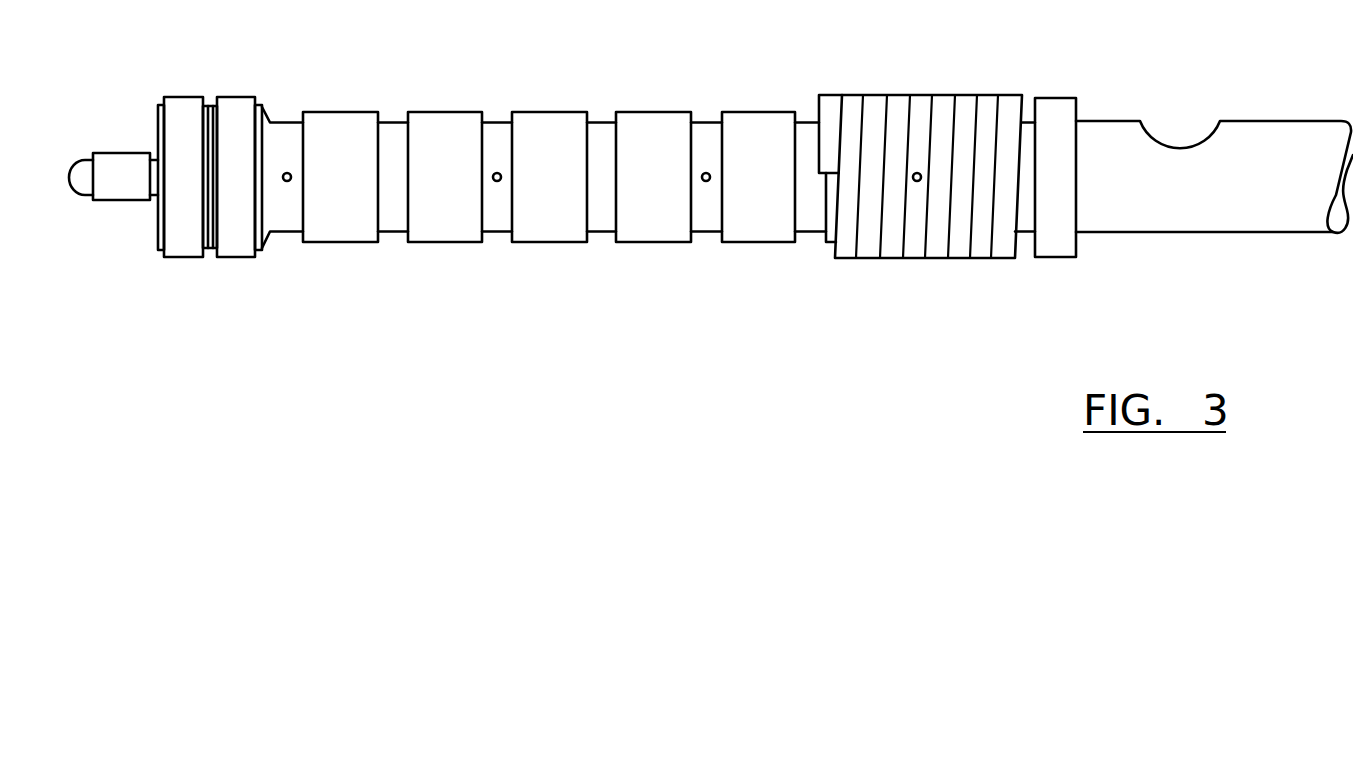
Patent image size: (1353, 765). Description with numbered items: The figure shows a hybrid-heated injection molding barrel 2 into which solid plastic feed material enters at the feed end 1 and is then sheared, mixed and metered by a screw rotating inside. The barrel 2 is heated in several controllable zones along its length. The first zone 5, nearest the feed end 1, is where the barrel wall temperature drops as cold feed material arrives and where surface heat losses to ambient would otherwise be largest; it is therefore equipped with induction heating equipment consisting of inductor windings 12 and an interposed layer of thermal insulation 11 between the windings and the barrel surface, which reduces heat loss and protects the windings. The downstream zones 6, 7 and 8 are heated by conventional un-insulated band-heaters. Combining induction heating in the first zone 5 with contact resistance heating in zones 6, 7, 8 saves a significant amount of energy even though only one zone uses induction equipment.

The feed end 1 is at (1180, 138).
The barrel 2 is at (1182, 232).
The first zone 5 is at (1008, 263).
The heating zone 6 is at (610, 263).
The heating zone 7 is at (402, 263).
The heating zone 8 is at (158, 263).
The thermal insulating layer 11 is at (825, 229).
The inductor windings 12 is at (985, 93).